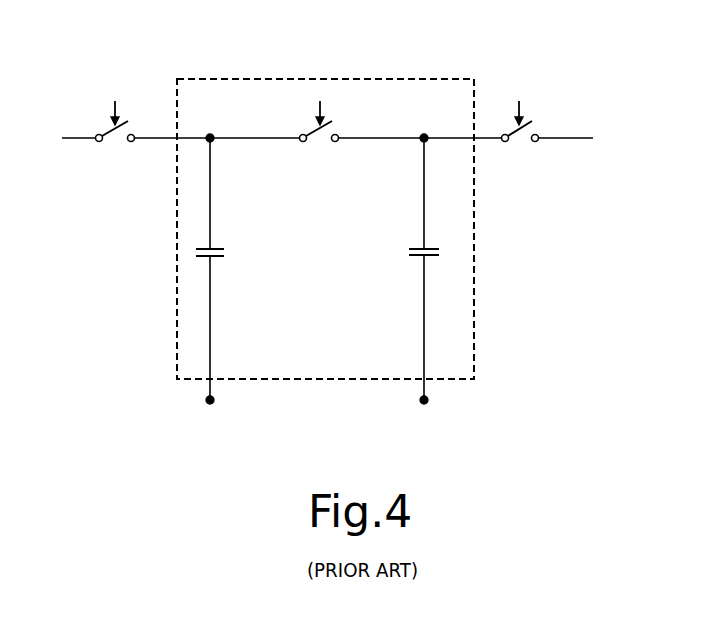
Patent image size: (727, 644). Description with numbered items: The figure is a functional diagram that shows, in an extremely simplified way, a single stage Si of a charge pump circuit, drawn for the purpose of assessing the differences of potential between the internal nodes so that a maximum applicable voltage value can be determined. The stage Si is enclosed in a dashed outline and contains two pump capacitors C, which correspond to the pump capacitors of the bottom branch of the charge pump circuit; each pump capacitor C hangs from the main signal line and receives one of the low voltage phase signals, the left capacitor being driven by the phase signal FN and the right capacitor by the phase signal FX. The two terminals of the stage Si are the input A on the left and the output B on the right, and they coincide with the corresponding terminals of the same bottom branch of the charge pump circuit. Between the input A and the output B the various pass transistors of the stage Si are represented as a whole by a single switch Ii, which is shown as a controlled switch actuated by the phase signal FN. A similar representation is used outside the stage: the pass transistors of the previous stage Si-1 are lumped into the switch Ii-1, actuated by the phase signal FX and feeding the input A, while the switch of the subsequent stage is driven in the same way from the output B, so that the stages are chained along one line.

The previous stage Si-1 is at (137, 96).
The stage Si is at (361, 99).
The pump capacitor C is at (317, 269).
The input terminal A is at (208, 127).
The output terminal B is at (423, 128).
The low voltage phase signal FX is at (306, 264).
The low voltage phase signal FN is at (260, 264).
The switch Ii-1 is at (107, 163).
The switch Ii is at (316, 170).